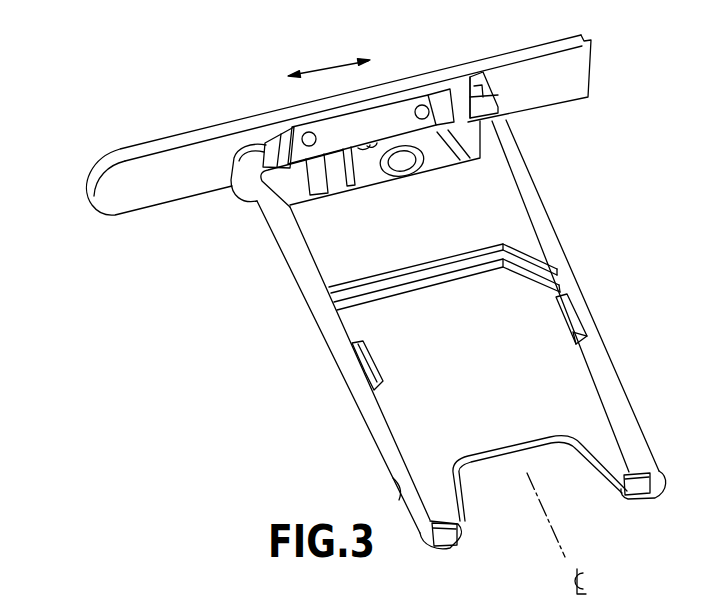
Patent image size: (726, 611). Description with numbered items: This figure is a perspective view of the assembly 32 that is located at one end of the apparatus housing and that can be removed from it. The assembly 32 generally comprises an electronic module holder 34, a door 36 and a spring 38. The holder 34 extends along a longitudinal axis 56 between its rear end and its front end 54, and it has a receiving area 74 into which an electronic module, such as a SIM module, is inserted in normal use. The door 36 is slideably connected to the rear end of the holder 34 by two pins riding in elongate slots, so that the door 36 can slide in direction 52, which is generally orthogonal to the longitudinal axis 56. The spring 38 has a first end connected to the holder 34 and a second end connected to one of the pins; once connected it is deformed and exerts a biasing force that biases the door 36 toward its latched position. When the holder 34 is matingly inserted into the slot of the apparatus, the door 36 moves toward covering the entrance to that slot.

The assembly 32 is at (114, 102).
The electronic module holder 34 is at (577, 279).
The door 36 is at (112, 217).
The spring 38 is at (487, 139).
The direction 52 is at (334, 68).
The front end 54 is at (640, 498).
The longitudinal axis 56 is at (553, 525).
The receiving area 74 is at (594, 393).